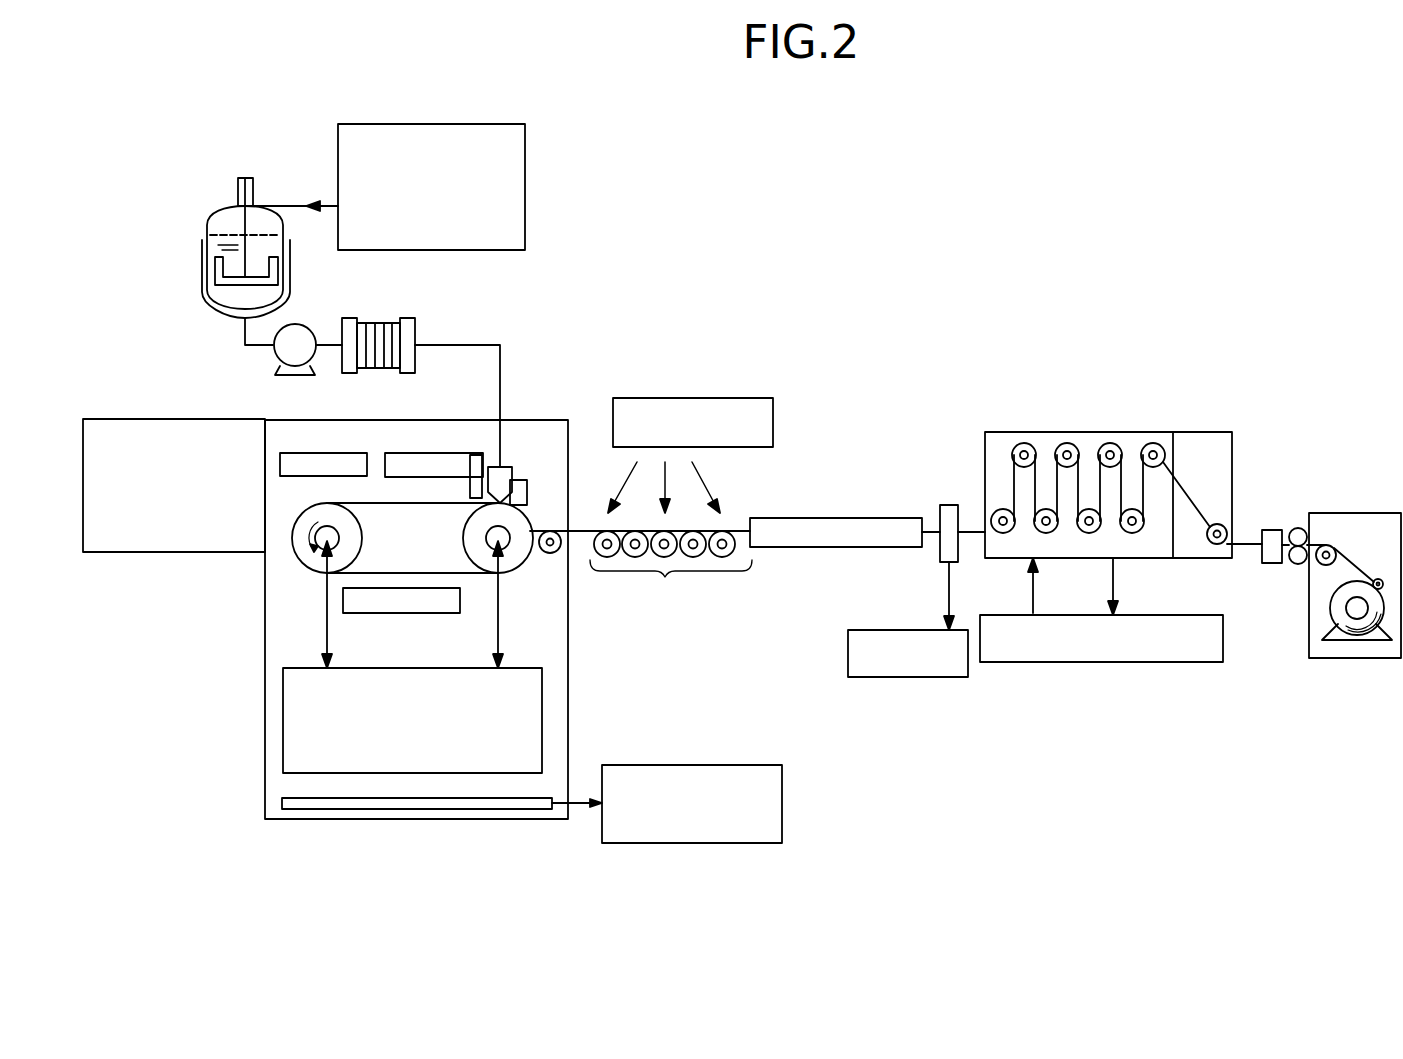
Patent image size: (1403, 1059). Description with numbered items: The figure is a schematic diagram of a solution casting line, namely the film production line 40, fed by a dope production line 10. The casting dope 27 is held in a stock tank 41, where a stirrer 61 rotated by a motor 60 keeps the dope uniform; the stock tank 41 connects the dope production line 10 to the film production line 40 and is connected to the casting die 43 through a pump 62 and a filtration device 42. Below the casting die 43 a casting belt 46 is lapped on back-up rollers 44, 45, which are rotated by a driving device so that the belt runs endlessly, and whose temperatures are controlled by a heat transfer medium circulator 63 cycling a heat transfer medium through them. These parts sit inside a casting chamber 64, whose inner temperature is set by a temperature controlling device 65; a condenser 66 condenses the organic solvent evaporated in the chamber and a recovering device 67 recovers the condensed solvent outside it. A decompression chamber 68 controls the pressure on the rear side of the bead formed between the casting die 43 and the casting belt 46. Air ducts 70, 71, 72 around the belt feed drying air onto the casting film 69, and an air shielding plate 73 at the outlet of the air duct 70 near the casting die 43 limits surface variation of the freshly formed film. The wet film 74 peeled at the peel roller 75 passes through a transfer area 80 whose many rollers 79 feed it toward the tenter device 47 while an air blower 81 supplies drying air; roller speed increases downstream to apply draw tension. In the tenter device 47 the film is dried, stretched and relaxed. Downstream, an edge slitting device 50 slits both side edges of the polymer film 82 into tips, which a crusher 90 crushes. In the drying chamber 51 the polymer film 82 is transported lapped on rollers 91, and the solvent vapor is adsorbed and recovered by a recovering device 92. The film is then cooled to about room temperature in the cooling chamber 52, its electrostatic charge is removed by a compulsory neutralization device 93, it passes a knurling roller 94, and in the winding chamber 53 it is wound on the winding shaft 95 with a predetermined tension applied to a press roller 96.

The dope production line 10 is at (398, 123).
The casting dope 27 is at (263, 293).
The film production line 40 is at (923, 205).
The stock tank 41 is at (214, 218).
The filtration device 42 is at (405, 333).
The casting die 43 is at (503, 470).
The back-up roller 44 is at (308, 560).
The back-up roller 45 is at (512, 556).
The casting belt 46 is at (525, 522).
The tenter device 47 is at (829, 525).
The edge slitting device 50 is at (948, 517).
The drying chamber 51 is at (1134, 432).
The cooling chamber 52 is at (1198, 432).
The winding chamber 53 is at (1365, 513).
The motor 60 is at (250, 190).
The stirrer 61 is at (232, 278).
The pump 62 is at (295, 355).
The heat transfer medium circulator 63 is at (283, 690).
The casting chamber 64 is at (265, 745).
The temperature controlling device 65 is at (238, 553).
The condenser 66 is at (405, 806).
The recovering device 67 is at (783, 800).
The decompression chamber 68 is at (520, 490).
The casting film 69 is at (416, 502).
The air duct 70 is at (405, 457).
The air duct 71 is at (345, 457).
The air duct 72 is at (402, 612).
The air shielding plate 73 is at (474, 457).
The wet film 74 is at (553, 555).
The peel roller 75 is at (568, 578).
The rollers 79 is at (722, 540).
The transfer area 80 is at (671, 569).
The air blower 81 is at (773, 422).
The polymer film 82 is at (936, 531).
The crusher 90 is at (905, 680).
The rollers 91 is at (1105, 452).
The recovering device 92 is at (1070, 665).
The compulsory neutralization device 93 is at (1272, 528).
The knurling roller 94 is at (1299, 528).
The winding shaft 95 is at (1352, 607).
The press roller 96 is at (1379, 578).